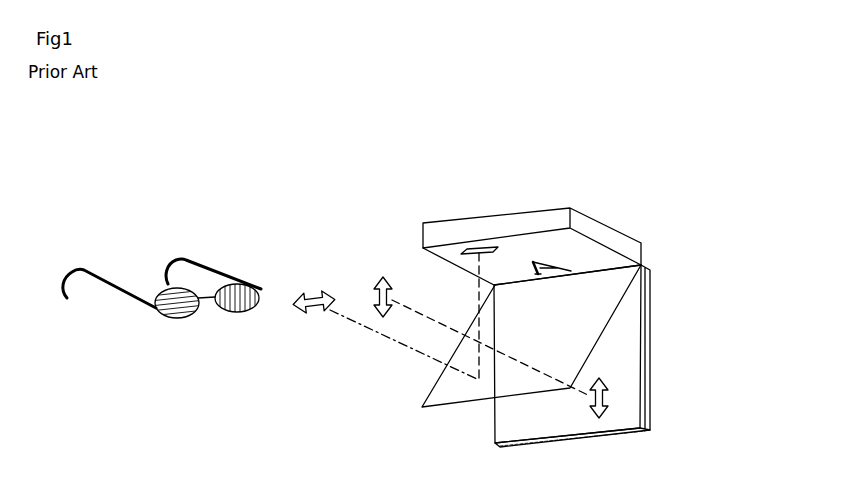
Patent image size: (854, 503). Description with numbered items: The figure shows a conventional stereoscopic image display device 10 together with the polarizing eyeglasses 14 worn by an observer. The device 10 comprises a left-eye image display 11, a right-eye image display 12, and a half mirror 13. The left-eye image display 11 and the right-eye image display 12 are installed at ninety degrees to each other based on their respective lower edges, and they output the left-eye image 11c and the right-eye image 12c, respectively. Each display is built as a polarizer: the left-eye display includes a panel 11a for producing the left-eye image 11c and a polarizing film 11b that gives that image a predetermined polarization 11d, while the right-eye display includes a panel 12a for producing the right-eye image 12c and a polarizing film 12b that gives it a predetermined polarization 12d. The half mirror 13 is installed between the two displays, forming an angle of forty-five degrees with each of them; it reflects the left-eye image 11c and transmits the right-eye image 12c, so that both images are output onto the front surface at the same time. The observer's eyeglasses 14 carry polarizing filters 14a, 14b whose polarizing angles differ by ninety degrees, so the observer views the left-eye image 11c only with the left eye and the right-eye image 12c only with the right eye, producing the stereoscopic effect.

The stereoscopic image display device 10 is at (62, 110).
The left-eye image display 11 is at (668, 199).
The panel 11a is at (589, 222).
The polarizing film 11b is at (625, 243).
The left-eye image 11c is at (537, 268).
The polarization 11d is at (478, 250).
The right-eye image display 12 is at (712, 350).
The panel 12a is at (652, 352).
The polarizing film 12b is at (642, 410).
The right-eye image 12c is at (612, 333).
The polarization 12d is at (590, 400).
The half mirror 13 is at (438, 407).
The polarizing eyeglasses 14 is at (108, 283).
The polarizing filter 14a is at (167, 317).
The polarizing filter 14b is at (230, 313).